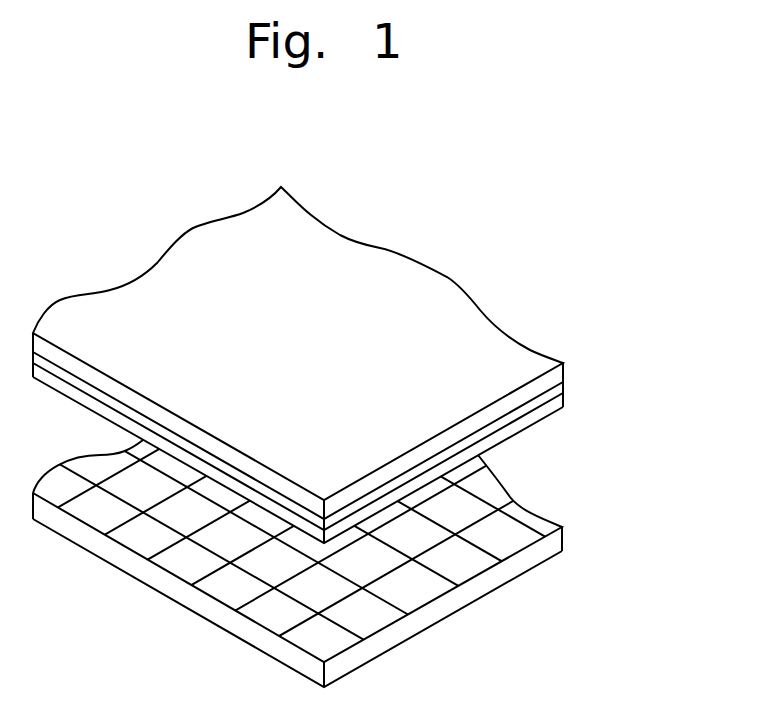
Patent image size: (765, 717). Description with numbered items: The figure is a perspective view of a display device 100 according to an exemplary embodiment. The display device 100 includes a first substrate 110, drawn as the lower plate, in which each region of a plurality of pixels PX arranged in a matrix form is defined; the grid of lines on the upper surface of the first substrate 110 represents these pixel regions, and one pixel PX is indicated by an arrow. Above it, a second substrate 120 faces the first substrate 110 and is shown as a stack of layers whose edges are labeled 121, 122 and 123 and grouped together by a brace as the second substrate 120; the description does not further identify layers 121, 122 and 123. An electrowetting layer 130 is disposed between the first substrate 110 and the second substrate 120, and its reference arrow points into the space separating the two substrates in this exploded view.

The display device 100 is at (115, 178).
The first substrate 110 is at (382, 459).
The second substrate 120 is at (370, 365).
The polarizing layer 121 is at (553, 376).
The retardation layer 122 is at (553, 392).
The adhesive layer 123 is at (651, 362).
The electrowetting layer 130 is at (535, 473).
The pixel PX is at (330, 640).